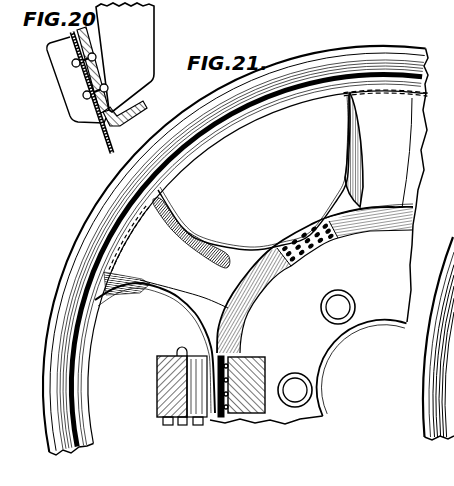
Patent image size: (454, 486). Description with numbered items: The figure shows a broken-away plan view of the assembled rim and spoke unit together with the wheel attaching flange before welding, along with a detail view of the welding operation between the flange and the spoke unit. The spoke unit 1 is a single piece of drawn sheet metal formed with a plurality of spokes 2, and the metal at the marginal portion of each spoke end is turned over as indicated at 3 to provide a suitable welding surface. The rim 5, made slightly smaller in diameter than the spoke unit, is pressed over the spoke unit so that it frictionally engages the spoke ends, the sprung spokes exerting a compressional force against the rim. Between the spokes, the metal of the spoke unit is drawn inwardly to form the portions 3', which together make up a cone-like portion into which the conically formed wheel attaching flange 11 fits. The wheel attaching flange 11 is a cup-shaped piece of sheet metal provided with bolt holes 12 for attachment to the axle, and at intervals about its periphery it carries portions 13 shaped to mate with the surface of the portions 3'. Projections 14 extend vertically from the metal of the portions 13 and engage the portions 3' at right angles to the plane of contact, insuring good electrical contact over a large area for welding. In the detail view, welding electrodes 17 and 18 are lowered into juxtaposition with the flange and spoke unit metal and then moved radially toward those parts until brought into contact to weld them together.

In FIG. 21, the spoke unit 1 is at (260, 247).
In FIG. 21, the spoke 2 is at (154, 262).
In FIG. 21, the turned over portion 3 is at (156, 231).
In FIG. 21, the portion of the spoke unit 3' is at (362, 148).
In FIG. 20, the portion of the spoke unit 3' is at (92, 96).
In FIG. 21, the rim 5 is at (97, 220).
In FIG. 21, the wheel attaching flange 11 is at (307, 350).
In FIG. 21, the bolt hole 12 is at (343, 320).
In FIG. 21, the portion of the wheel attaching flange 13 is at (328, 242).
In FIG. 20, the portion of the wheel attaching flange 13 is at (72, 78).
In FIG. 21, the projection 14 is at (307, 233).
In FIG. 21, the welding electrode 17 is at (257, 358).
In FIG. 20, the welding electrode 17 is at (143, 38).
In FIG. 20, the welding electrode 18 is at (72, 110).